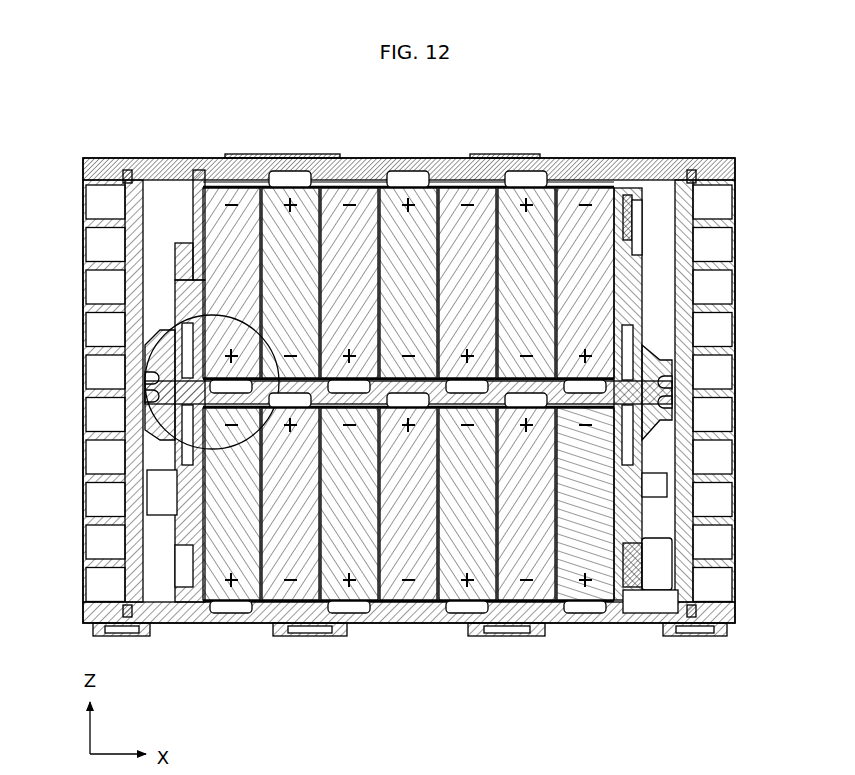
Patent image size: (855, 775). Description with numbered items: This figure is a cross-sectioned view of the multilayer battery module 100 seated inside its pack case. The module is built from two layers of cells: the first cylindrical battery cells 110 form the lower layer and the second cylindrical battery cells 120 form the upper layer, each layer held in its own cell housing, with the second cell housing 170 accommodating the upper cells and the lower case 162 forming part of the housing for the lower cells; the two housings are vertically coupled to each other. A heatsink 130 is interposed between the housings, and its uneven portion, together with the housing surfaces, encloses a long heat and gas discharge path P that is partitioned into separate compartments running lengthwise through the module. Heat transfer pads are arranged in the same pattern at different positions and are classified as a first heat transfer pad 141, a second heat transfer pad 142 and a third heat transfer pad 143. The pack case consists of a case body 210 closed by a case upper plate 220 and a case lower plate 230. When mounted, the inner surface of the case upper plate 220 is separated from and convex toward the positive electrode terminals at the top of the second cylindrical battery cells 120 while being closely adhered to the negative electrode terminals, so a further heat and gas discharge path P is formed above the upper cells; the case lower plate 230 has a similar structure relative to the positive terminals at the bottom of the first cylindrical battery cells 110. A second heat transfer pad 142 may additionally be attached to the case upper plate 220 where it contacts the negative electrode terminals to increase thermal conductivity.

The multilayer battery module 100 is at (702, 400).
The first cylindrical battery cells 110 is at (284, 588).
The second cylindrical battery cells 120 is at (225, 188).
The heatsink 130 is at (653, 392).
The first heat transfer pad 141 is at (160, 328).
The second heat transfer pad 142 is at (352, 186).
The third heat transfer pad 143 is at (308, 608).
The lower case 162 is at (630, 523).
The second cell housing 170 is at (650, 267).
The case body 210 is at (716, 432).
The case upper plate 220 is at (606, 162).
The case lower plate 230 is at (638, 623).
The heat and gas discharge path P is at (290, 176).